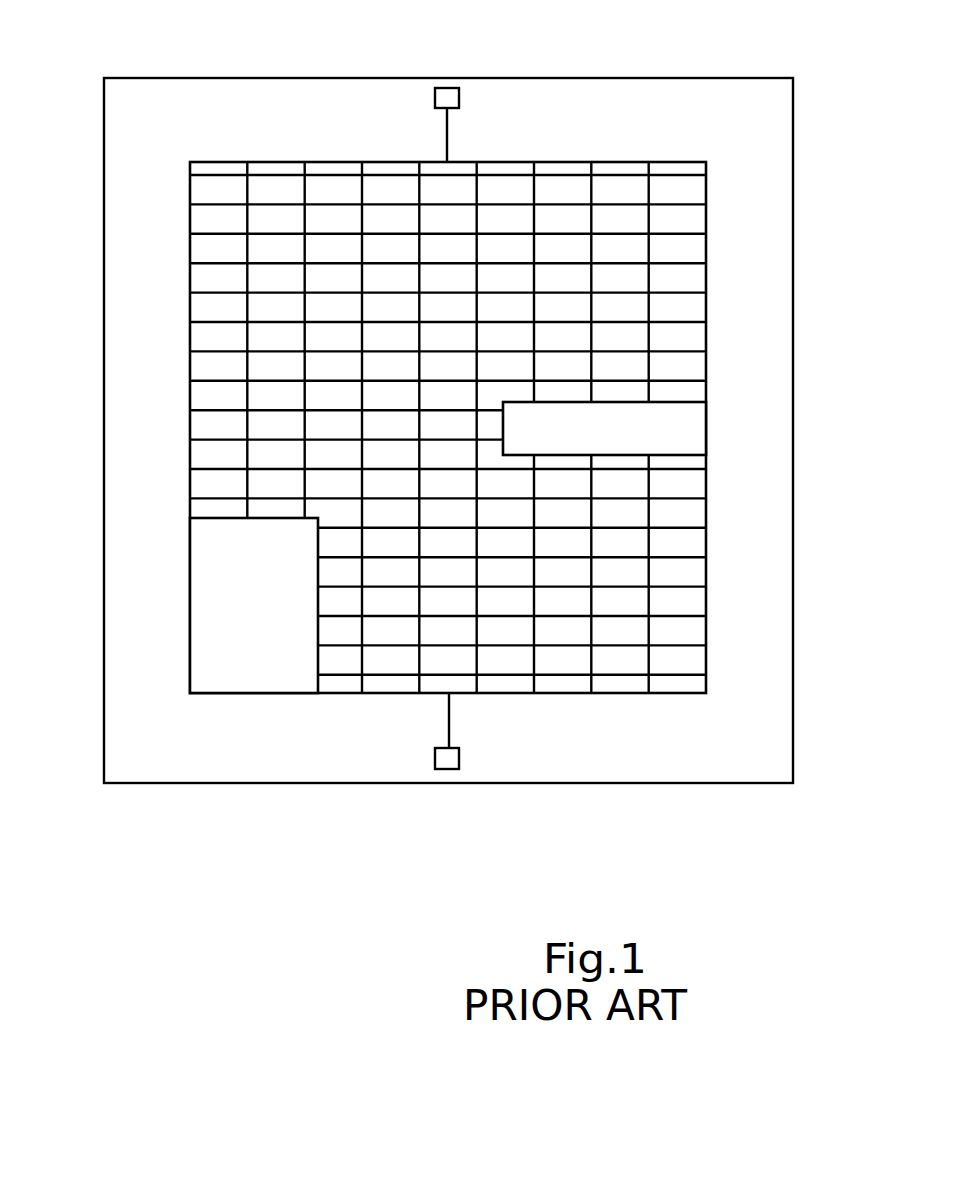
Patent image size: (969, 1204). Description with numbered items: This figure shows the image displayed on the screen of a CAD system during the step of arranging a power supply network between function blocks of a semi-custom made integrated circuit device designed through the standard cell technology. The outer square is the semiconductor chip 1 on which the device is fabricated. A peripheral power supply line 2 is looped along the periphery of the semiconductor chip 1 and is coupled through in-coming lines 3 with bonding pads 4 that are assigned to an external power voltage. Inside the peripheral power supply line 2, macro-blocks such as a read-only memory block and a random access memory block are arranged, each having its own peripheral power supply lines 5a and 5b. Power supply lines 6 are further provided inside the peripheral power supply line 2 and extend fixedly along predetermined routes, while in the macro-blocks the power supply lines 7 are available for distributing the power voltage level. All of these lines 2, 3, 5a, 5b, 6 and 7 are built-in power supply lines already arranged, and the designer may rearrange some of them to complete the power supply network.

The semiconductor chip 1 is at (104, 466).
The peripheral power supply line 2 is at (190, 280).
The in-coming lines 3 is at (447, 135).
The bonding pads 4 is at (443, 97).
The peripheral power supply line of macro-block 5a is at (318, 633).
The peripheral power supply line of macro-block 5b is at (706, 415).
The power supply lines 6 is at (255, 185).
The power supply lines 7 is at (672, 207).